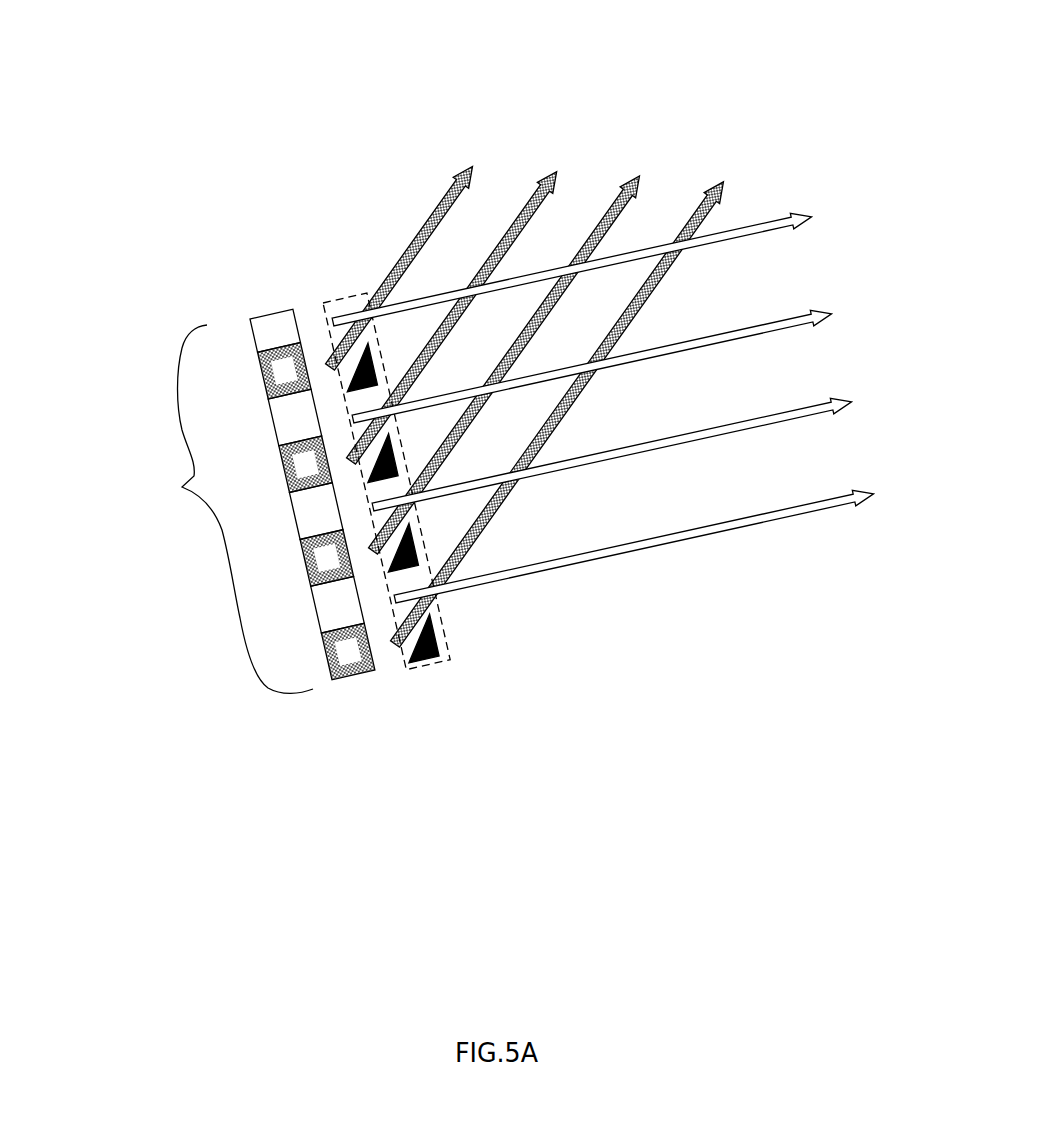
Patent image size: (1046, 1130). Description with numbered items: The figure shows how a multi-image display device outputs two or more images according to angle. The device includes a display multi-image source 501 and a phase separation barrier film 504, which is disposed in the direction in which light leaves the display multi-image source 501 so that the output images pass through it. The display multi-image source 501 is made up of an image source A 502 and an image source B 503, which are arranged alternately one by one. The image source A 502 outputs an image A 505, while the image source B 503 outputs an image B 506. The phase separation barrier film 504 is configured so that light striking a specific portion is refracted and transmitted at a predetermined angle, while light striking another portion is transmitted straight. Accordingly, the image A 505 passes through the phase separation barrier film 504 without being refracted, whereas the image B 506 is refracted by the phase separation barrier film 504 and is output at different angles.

The display multi-image source 501 is at (90, 470).
The image source A 502 is at (266, 348).
The image source B 503 is at (271, 375).
The phase separation barrier film 504 is at (323, 298).
The image A 505 is at (903, 325).
The image B 506 is at (563, 108).